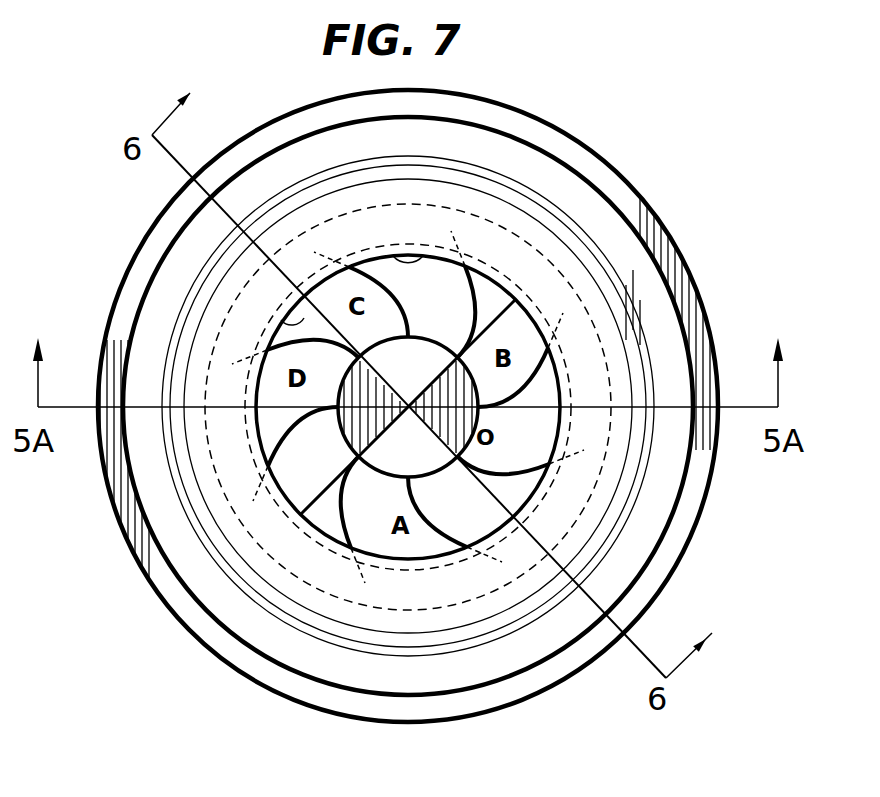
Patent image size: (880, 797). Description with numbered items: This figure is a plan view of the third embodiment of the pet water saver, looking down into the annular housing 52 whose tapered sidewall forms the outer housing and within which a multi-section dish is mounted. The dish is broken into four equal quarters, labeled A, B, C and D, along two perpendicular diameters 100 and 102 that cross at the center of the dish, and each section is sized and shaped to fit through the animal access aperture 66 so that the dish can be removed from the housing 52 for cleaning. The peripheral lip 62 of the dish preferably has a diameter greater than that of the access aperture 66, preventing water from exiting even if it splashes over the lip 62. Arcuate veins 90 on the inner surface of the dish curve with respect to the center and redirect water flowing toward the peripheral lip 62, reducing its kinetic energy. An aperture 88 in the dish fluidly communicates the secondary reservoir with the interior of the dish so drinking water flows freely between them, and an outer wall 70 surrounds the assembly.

The annular housing 52 is at (280, 633).
The peripheral lip 62 is at (583, 300).
The access aperture 66 is at (400, 255).
The outer housing wall 70 is at (712, 506).
The aperture 88 is at (497, 430).
The arcuate veins 90 is at (297, 430).
The diameter 100 is at (503, 292).
The diameter 102 is at (283, 318).